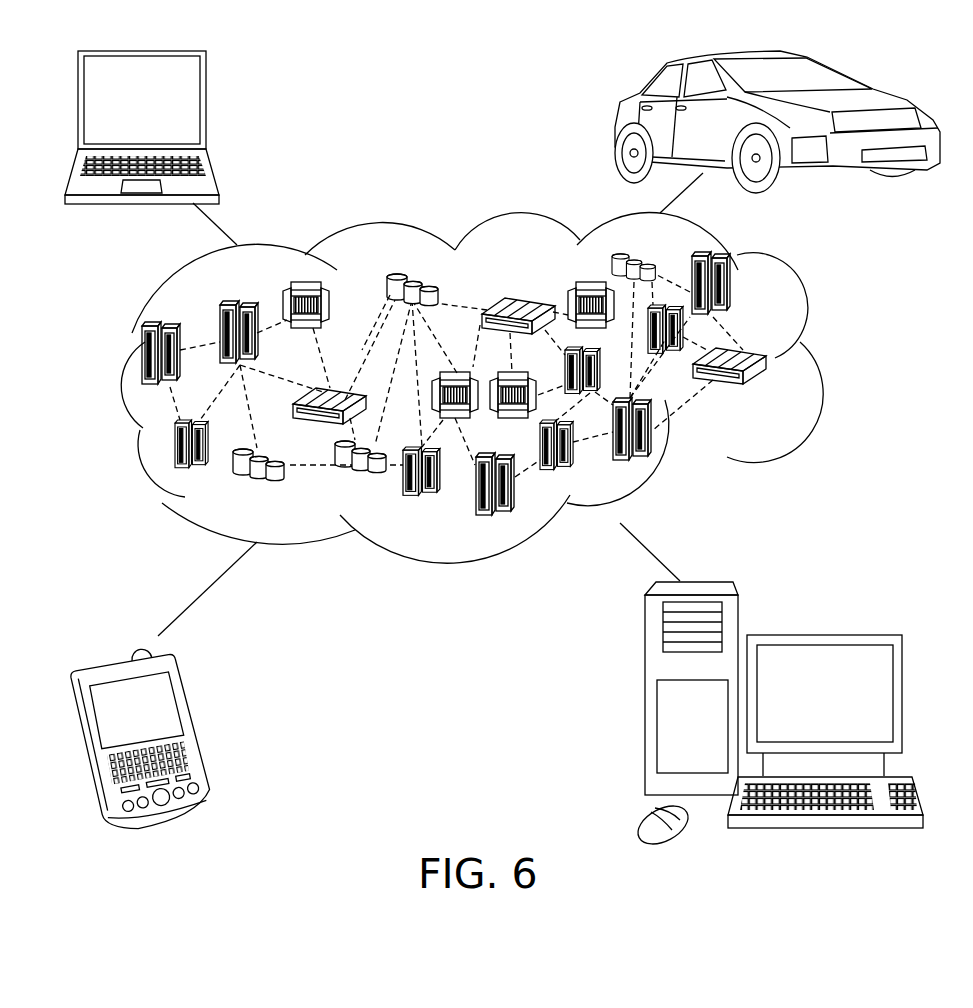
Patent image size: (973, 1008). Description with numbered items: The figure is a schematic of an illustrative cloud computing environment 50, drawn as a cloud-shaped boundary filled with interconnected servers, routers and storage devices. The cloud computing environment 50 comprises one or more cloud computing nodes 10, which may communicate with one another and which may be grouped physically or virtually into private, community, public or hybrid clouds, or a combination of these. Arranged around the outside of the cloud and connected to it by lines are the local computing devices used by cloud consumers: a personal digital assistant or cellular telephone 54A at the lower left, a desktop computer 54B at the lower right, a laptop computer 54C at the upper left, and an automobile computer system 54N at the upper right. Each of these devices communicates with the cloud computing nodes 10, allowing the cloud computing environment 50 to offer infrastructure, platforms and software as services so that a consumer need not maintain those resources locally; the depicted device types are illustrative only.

The laptop computer 54C is at (206, 108).
The automobile computer system 54N is at (616, 122).
The cloud computing environment 50 is at (821, 365).
The cloud computing node 10 is at (784, 396).
The personal digital assistant (PDA) or cellular telephone 54A is at (197, 722).
The desktop computer 54B is at (822, 634).